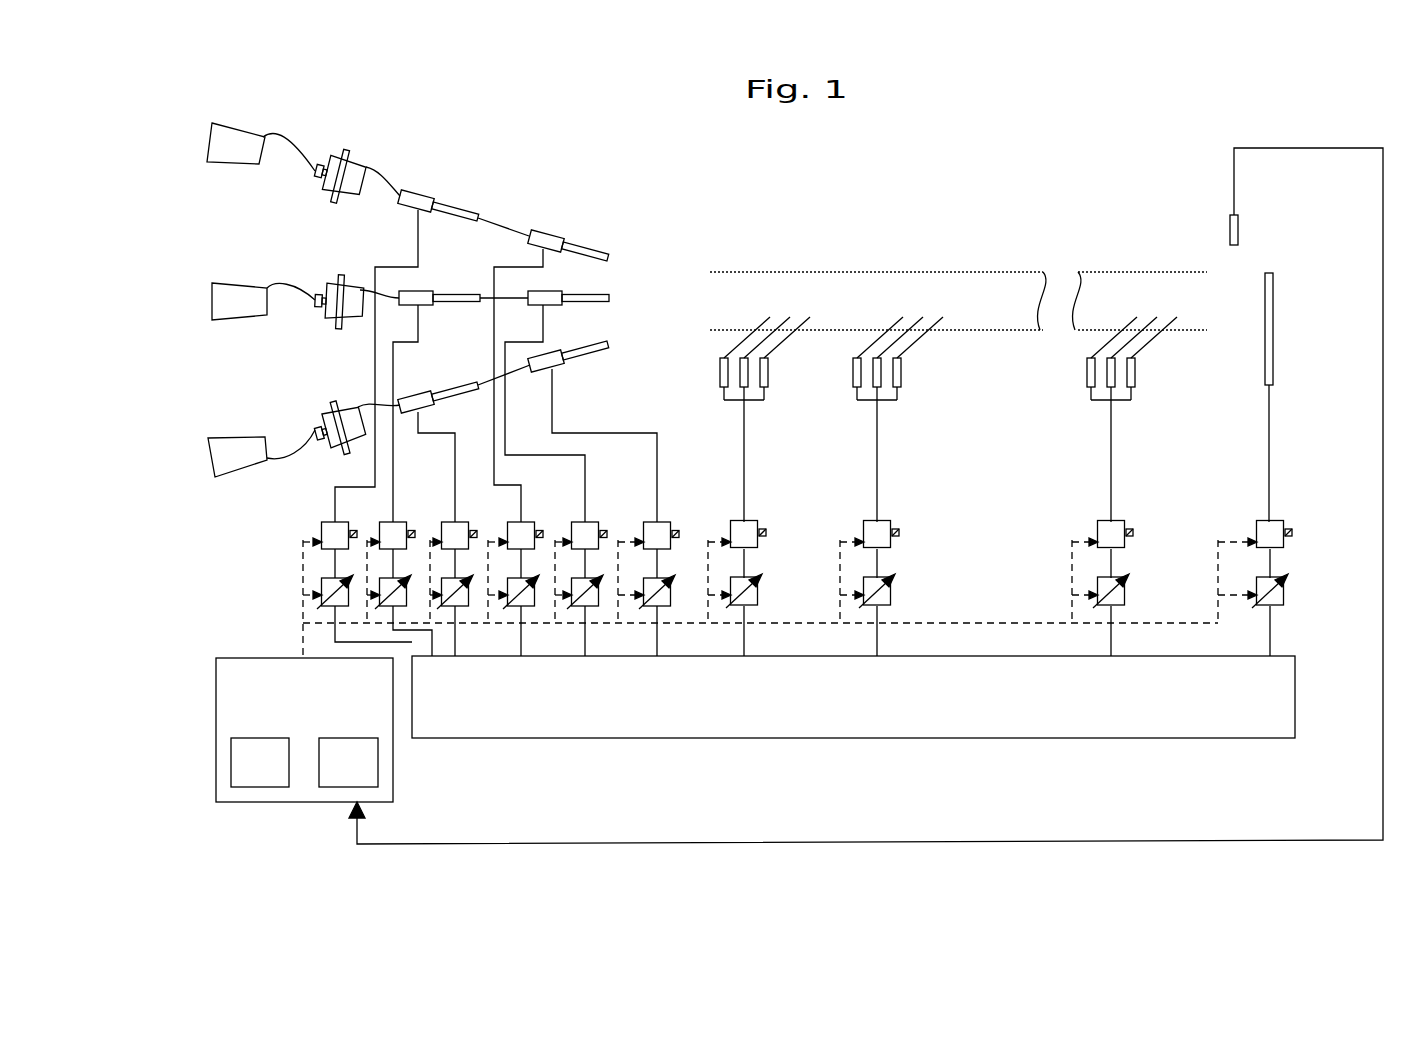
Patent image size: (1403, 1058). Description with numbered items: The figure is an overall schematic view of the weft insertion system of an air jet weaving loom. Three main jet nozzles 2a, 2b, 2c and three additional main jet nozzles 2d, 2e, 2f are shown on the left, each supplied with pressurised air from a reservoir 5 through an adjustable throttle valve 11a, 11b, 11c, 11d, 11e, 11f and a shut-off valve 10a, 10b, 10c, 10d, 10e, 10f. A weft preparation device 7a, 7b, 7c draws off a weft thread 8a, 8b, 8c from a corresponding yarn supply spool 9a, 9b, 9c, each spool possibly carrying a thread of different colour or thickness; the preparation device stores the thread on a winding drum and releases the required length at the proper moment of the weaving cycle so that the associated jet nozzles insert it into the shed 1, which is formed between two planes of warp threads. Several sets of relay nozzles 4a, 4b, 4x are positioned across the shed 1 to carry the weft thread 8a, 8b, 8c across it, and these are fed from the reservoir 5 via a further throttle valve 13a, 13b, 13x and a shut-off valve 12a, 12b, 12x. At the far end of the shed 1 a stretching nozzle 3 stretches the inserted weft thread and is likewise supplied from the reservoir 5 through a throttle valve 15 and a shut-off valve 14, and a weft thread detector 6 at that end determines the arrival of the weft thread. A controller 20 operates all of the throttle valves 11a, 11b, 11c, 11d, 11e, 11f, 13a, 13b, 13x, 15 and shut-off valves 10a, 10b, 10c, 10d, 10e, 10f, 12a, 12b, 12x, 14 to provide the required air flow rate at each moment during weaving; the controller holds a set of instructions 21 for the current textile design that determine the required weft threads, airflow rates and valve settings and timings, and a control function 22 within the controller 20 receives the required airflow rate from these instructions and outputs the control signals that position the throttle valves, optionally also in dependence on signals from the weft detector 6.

The shed 1 is at (932, 280).
The main jet nozzle 2a is at (547, 365).
The main jet nozzle 2b is at (547, 298).
The main jet nozzle 2c is at (543, 237).
The additional main jet nozzle 2d is at (408, 402).
The additional main jet nozzle 2e is at (408, 298).
The additional main jet nozzle 2f is at (417, 197).
The stretching nozzle 3 is at (1275, 378).
The relay nozzle 4a is at (758, 413).
The relay nozzle 4b is at (891, 413).
The relay nozzle 4x is at (1125, 413).
The reservoir 5 is at (975, 705).
The weft thread detector 6 is at (1240, 237).
The weft preparation device 7a is at (317, 417).
The weft preparation device 7b is at (320, 297).
The weft preparation device 7c is at (327, 157).
The weft thread 8a is at (503, 380).
The weft thread 8b is at (283, 282).
The weft thread 8c is at (383, 173).
The yarn supply spool 9a is at (230, 452).
The yarn supply spool 9b is at (230, 302).
The yarn supply spool 9c is at (222, 133).
The shut-off valve 10a is at (668, 600).
The shut-off valve 10b is at (590, 600).
The shut-off valve 10c is at (525, 600).
The shut-off valve 10d is at (460, 600).
The shut-off valve 10e is at (410, 577).
The shut-off valve 10f is at (322, 585).
The adjustable throttle valve 11a is at (660, 530).
The adjustable throttle valve 11b is at (588, 532).
The adjustable throttle valve 11c is at (524, 531).
The adjustable throttle valve 11d is at (480, 518).
The adjustable throttle valve 11e is at (396, 534).
The adjustable throttle valve 11f is at (332, 537).
The shut-off valve 12a is at (748, 527).
The shut-off valve 12b is at (882, 527).
The shut-off valve 12x is at (1117, 527).
The throttle valve 13a is at (750, 602).
The throttle valve 13b is at (883, 600).
The throttle valve 13x is at (1117, 598).
The shut-off valve 14 is at (1278, 523).
The throttle valve 15 is at (1283, 598).
The controller 20 is at (243, 724).
The set of instructions 21 is at (265, 773).
The control function 22 is at (352, 773).